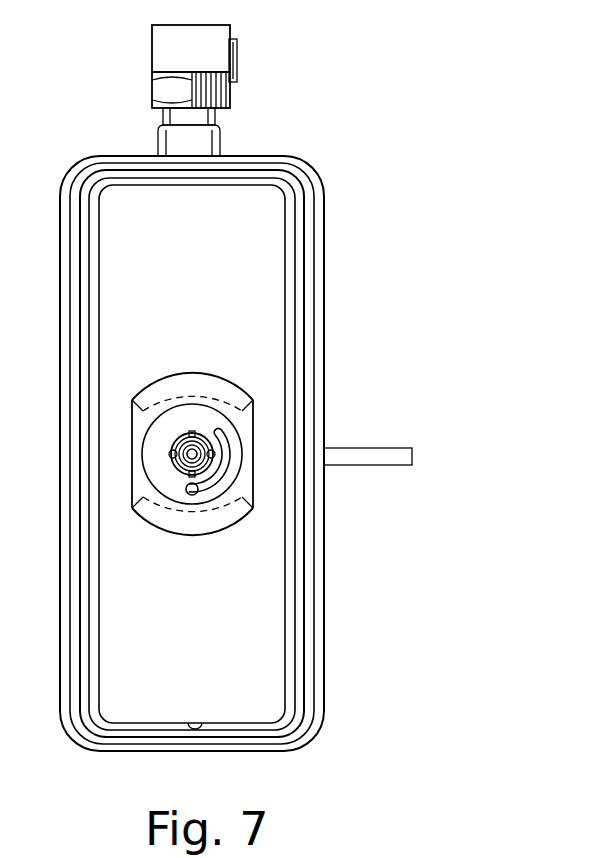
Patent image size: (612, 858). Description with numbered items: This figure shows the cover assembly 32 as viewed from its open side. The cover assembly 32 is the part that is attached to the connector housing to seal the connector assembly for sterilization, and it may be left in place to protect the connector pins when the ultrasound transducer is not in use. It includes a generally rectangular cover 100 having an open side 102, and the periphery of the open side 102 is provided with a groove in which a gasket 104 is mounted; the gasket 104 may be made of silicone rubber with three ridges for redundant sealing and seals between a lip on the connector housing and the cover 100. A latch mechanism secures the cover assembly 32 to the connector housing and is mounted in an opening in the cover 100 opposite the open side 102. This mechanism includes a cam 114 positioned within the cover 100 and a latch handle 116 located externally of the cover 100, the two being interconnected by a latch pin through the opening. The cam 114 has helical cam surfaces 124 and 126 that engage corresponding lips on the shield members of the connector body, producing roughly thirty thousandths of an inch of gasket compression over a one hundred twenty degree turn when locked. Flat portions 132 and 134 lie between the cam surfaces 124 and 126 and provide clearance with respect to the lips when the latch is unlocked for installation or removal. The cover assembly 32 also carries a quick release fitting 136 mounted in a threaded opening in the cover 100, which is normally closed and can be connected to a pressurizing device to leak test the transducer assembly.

The cover assembly 32 is at (324, 168).
The cover 100 is at (252, 712).
The open side 102 is at (212, 279).
The gasket 104 is at (318, 290).
The cam 114 is at (132, 420).
The latch handle 116 is at (378, 467).
The helical cam surface 124 is at (197, 530).
The helical cam surface 126 is at (201, 384).
The flat portion 132 is at (132, 486).
The flat portion 134 is at (255, 488).
The quick release fitting 136 is at (215, 40).